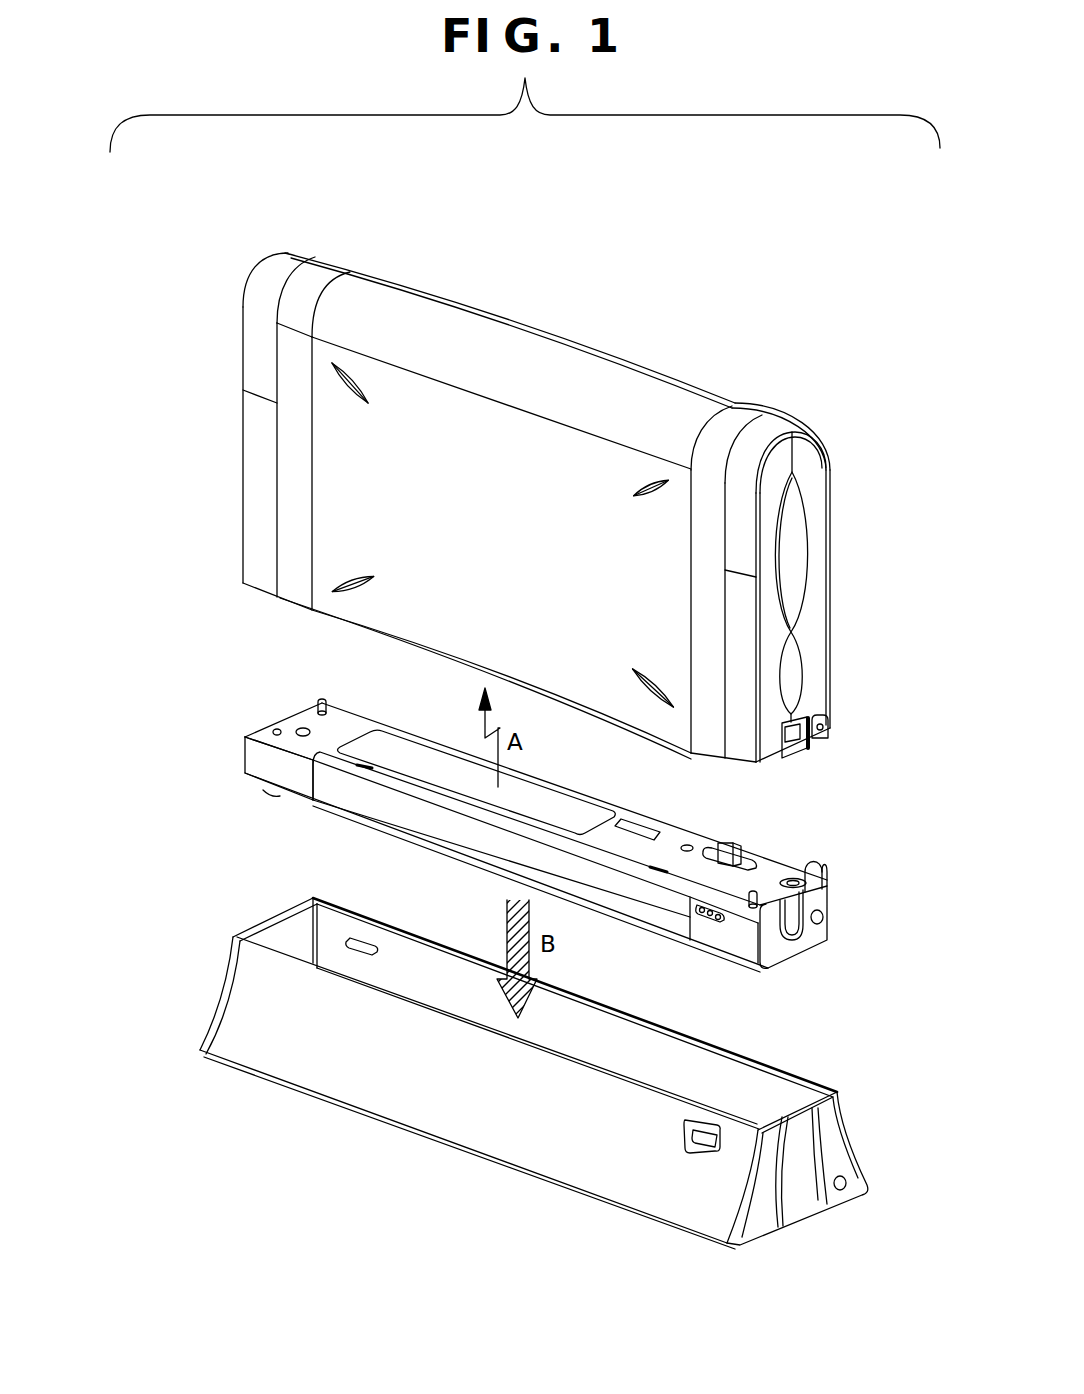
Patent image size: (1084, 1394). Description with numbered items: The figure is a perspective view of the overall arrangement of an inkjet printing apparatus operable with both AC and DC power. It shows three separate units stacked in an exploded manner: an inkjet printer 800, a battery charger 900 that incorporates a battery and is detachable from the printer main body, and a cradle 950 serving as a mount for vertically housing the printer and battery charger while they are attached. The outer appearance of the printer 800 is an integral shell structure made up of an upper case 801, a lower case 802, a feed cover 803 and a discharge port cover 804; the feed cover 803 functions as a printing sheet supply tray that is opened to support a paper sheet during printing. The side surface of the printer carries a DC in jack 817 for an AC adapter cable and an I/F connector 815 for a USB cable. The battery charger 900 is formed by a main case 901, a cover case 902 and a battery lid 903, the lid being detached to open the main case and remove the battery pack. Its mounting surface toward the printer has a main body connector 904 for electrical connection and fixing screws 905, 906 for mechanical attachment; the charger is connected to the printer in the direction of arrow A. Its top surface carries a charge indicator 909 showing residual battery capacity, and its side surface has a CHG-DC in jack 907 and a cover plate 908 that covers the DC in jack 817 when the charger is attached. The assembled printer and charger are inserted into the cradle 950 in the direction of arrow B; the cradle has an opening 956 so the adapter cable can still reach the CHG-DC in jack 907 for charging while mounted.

The inkjet printer 800 is at (312, 255).
The upper case 801 is at (742, 497).
The lower case 802 is at (812, 458).
The feed cover 803 is at (473, 336).
The discharge port cover 804 is at (590, 345).
The I/F connector 815 is at (807, 707).
The DC in jack 817 is at (830, 722).
The battery charger 900 is at (245, 735).
The main case 901 is at (265, 767).
The cover case 902 is at (293, 722).
The battery lid 903 is at (363, 803).
The main body connector 904 is at (733, 842).
The fixing screw 905 is at (758, 904).
The fixing screw 906 is at (313, 703).
The CHG-DC in jack 907 is at (824, 915).
The cover plate 908 is at (862, 857).
The charge indicator 909 is at (710, 918).
The cradle 950 is at (200, 1052).
The hole 956 is at (847, 1200).